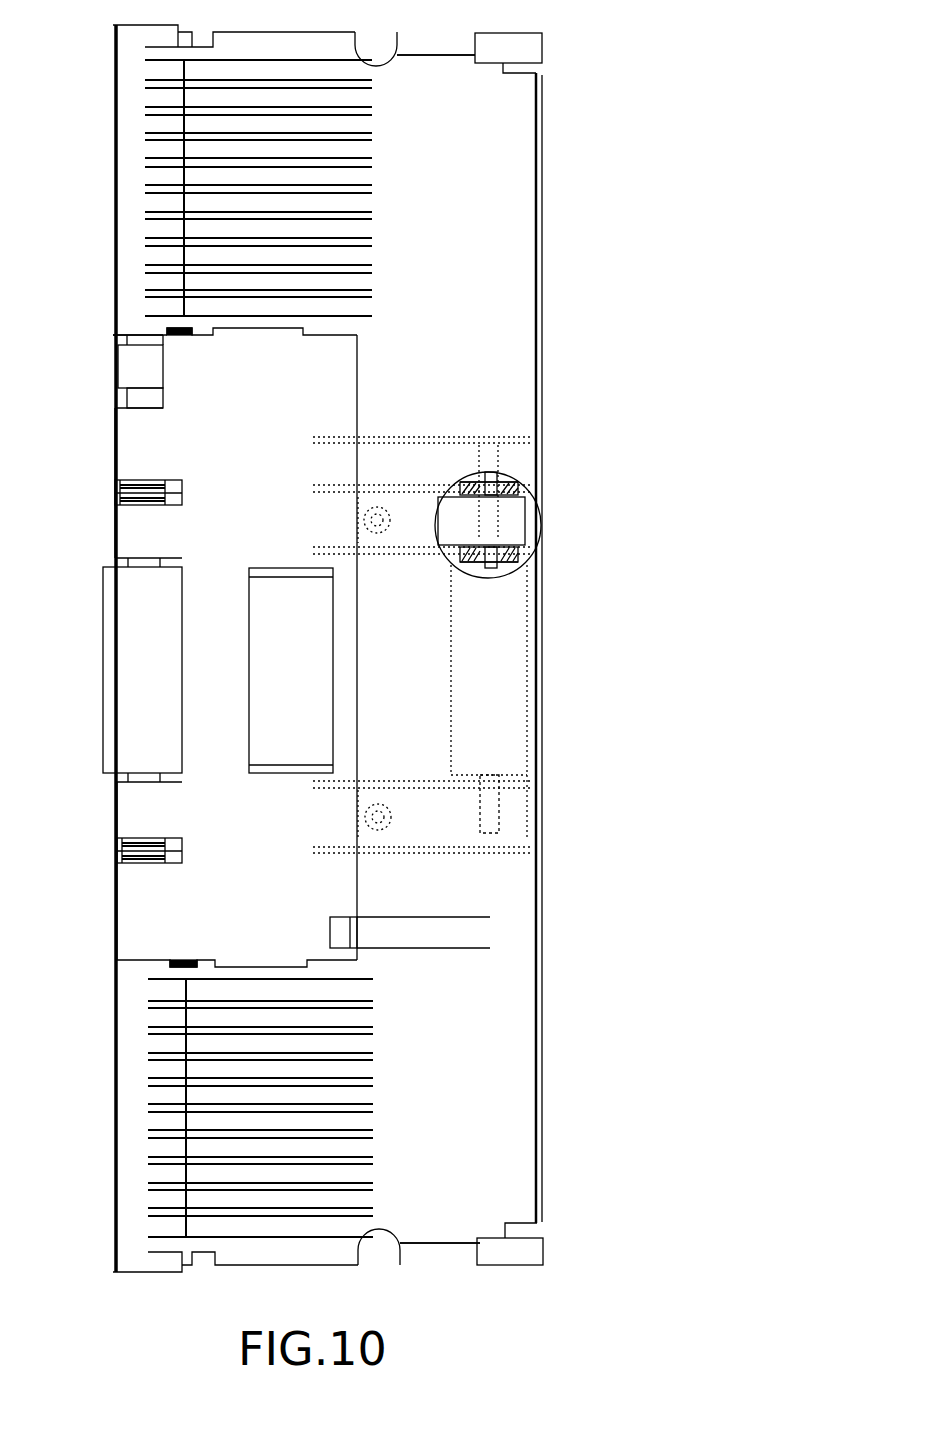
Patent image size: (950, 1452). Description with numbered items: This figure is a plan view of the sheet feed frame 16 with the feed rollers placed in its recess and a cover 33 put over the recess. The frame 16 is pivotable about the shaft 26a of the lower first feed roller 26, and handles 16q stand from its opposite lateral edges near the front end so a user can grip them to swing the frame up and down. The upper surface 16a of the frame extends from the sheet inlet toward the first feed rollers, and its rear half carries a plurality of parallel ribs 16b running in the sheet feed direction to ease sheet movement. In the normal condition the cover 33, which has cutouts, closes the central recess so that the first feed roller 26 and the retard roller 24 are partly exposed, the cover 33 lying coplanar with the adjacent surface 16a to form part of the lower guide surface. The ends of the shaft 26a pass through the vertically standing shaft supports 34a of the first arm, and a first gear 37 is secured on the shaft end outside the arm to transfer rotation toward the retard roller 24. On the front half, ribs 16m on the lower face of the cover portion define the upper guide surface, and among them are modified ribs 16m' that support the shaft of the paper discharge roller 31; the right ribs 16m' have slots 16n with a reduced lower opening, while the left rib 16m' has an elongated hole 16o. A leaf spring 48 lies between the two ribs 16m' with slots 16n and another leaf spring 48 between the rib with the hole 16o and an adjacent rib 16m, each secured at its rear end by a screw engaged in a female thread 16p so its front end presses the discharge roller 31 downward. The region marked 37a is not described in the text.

The sheet feed frame 16 is at (72, 195).
The upper surface 16a is at (462, 258).
The parallel ribs 16b is at (368, 157).
The parallel ribs 16m is at (423, 610).
The modified ribs 16m' is at (543, 607).
The slots 16n is at (483, 477).
The elongated hole 16o is at (499, 787).
The female thread 16p is at (386, 506).
The handles 16q is at (542, 48).
The retard roller 24 is at (310, 690).
The lower first feed roller 26 is at (160, 690).
The shaft 26a is at (130, 395).
The paper discharge roller 31 is at (528, 675).
The cover 33 is at (253, 495).
The shaft supports 34a is at (115, 493).
The first gear 37 is at (118, 363).
The detail region 37a is at (500, 457).
The leaf spring 48 is at (518, 518).